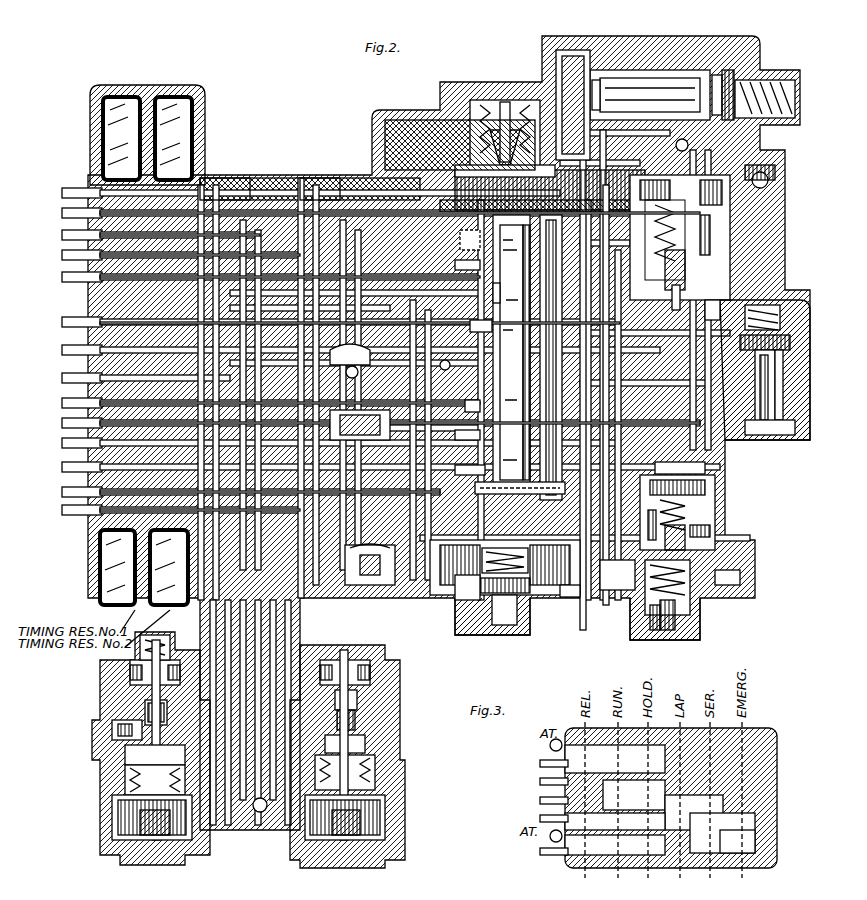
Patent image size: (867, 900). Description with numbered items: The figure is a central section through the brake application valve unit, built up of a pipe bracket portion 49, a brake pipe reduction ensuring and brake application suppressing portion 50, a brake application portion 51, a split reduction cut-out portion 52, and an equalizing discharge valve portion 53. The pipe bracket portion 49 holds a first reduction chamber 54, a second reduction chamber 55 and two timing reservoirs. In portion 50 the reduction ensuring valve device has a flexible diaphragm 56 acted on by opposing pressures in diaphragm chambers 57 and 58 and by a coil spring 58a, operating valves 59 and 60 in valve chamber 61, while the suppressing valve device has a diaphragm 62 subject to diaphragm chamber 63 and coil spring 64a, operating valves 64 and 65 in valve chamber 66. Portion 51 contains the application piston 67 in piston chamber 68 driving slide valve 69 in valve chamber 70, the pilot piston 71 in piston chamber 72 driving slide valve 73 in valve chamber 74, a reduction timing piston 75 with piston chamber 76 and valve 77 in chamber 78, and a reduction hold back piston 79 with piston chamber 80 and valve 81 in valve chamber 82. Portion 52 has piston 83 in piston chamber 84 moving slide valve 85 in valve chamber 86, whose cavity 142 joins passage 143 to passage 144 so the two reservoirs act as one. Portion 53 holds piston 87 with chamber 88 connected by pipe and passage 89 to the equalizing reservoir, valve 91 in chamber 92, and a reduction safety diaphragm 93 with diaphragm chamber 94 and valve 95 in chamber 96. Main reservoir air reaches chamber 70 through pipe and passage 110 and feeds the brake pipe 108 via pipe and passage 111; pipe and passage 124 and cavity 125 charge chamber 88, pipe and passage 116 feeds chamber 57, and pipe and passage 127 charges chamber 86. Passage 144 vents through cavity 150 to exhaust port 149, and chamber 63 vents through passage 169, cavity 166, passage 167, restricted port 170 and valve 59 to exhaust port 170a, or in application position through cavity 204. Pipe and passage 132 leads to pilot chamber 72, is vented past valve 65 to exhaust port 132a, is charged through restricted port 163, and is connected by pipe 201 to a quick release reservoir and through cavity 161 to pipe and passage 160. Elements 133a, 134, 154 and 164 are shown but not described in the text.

In FIG. 2, the pipe bracket portion 49 is at (150, 98).
In FIG. 2, the brake pipe reduction ensuring and brake application suppressing portion 50 is at (225, 185).
In FIG. 2, the brake application portion 51 is at (330, 185).
In FIG. 2, the split reduction cut-out portion 52 is at (796, 385).
In FIG. 2, the equalizing discharge valve portion 53 is at (612, 600).
In FIG. 2, the first reduction chamber 54 is at (200, 98).
In FIG. 2, the second reduction chamber 55 is at (112, 100).
In FIG. 2, the flexible diaphragm 56 is at (100, 840).
In FIG. 2, the diaphragm chamber 57 is at (125, 845).
In FIG. 2, the diaphragm chamber 58 is at (120, 778).
In FIG. 2, the coil spring 58a is at (120, 762).
In FIG. 2, the valve 59 is at (130, 700).
In FIG. 2, the valve 60 is at (140, 715).
In FIG. 2, the valve chamber 61 is at (168, 712).
In FIG. 2, the flexible diaphragm 62 is at (375, 855).
In FIG. 2, the diaphragm chamber 63 is at (318, 845).
In FIG. 2, the valve 64 is at (370, 690).
In FIG. 2, the coil spring 64a is at (375, 772).
In FIG. 2, the valve 65 is at (360, 720).
In FIG. 2, the valve chamber 66 is at (360, 700).
In FIG. 2, the piston 67 is at (470, 140).
In FIG. 2, the piston chamber 68 is at (480, 165).
In FIG. 2, the slide valve 69 is at (514, 352).
In FIG. 2, the valve chamber 70 is at (528, 275).
In FIG. 2, the piston 71 is at (730, 70).
In FIG. 2, the piston chamber 72 is at (770, 78).
In FIG. 2, the slide valve 73 is at (596, 82).
In FIG. 2, the valve chamber 74 is at (640, 78).
In FIG. 2, the piston 75 is at (700, 235).
In FIG. 2, the piston chamber 76 is at (770, 182).
In FIG. 2, the valve 77 is at (690, 262).
In FIG. 2, the valve and piston chamber 78 is at (710, 240).
In FIG. 2, the piston 79 is at (700, 500).
In FIG. 2, the piston chamber 80 is at (705, 468).
In FIG. 2, the valve 81 is at (690, 518).
In FIG. 2, the valve chamber 82 is at (710, 532).
In FIG. 2, the piston 83 is at (800, 310).
In FIG. 2, the piston chamber 84 is at (760, 306).
In FIG. 2, the slide valve 85 is at (760, 355).
In FIG. 2, the valve chamber 86 is at (775, 400).
In FIG. 2, the piston 87 is at (572, 598).
In FIG. 2, the chamber 88 is at (540, 585).
In FIG. 2, the pipe and passage 89 is at (445, 598).
In FIG. 2, the valve 91 is at (503, 625).
In FIG. 2, the chamber 92 is at (470, 600).
In FIG. 2, the flexible diaphragm 93 is at (670, 628).
In FIG. 2, the diaphragm chamber 94 is at (695, 625).
In FIG. 2, the valve 95 is at (658, 630).
In FIG. 2, the valve and diaphragm chamber 96 is at (735, 585).
In FIG. 2, the brake pipe 108 is at (408, 600).
In FIG. 3, the brake pipe 108 is at (540, 800).
In FIG. 2, the pipe and passage 110 is at (96, 492).
In FIG. 2, the pipe and passage 111 is at (96, 236).
In FIG. 2, the pipe and passage 116 is at (225, 830).
In FIG. 3, the pipe and passage 116 is at (540, 781).
In FIG. 2, the pipe and passage 124 is at (96, 256).
In FIG. 2, the cavity 125 is at (510, 290).
In FIG. 2, the pipe and passage 127 is at (400, 132).
In FIG. 2, the pipe and passage 132 is at (560, 50).
In FIG. 2, the exhaust port 132a is at (365, 748).
In FIG. 2, the passage 133a is at (75, 368).
In FIG. 2, the port 134 is at (455, 252).
In FIG. 2, the cavity 142 is at (790, 415).
In FIG. 2, the passage 143 is at (250, 212).
In FIG. 3, the passage 143 is at (540, 851).
In FIG. 2, the passage 144 is at (740, 425).
In FIG. 2, the exhaust port 149 is at (450, 365).
In FIG. 2, the cavity 150 is at (480, 405).
In FIG. 2, the chamber 154 is at (360, 425).
In FIG. 2, the pipe and passage 160 is at (72, 280).
In FIG. 3, the pipe and passage 160 is at (540, 763).
In FIG. 2, the cavity 161 is at (480, 325).
In FIG. 2, the restricted port 163 is at (716, 76).
In FIG. 2, the port 164 is at (460, 268).
In FIG. 2, the cavity 166 is at (480, 437).
In FIG. 2, the passage 167 is at (96, 424).
In FIG. 3, the passage 167 is at (540, 818).
In FIG. 2, the passage 169 is at (280, 830).
In FIG. 2, the restricted port 170 is at (110, 730).
In FIG. 2, the atmospheric exhaust port 170a is at (130, 672).
In FIG. 2, the pipe 201 is at (96, 404).
In FIG. 2, the cavity 204 is at (485, 470).